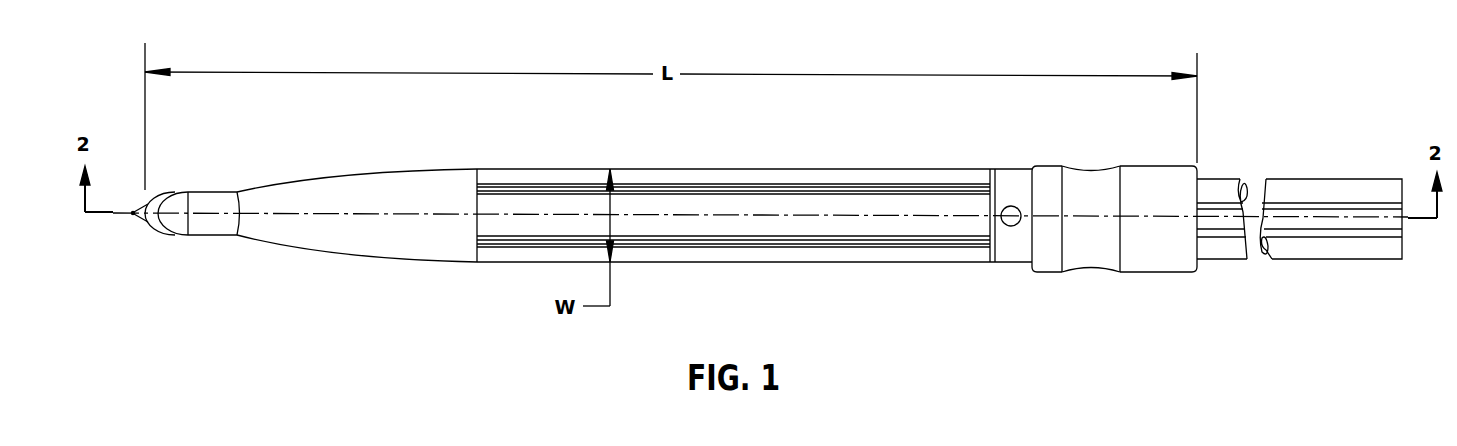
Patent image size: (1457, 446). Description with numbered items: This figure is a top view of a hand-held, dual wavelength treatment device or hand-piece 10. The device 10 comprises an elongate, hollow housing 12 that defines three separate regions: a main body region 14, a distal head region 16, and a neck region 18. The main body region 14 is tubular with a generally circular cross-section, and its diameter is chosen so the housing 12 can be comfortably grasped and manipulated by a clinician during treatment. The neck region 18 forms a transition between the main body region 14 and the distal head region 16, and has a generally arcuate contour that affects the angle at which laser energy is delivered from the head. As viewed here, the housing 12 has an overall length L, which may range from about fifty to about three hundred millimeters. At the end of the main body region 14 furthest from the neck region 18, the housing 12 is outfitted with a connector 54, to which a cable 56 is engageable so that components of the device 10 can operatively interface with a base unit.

The hand-held dual wavelength treatment device 10 is at (780, 152).
The elongate housing 12 is at (874, 162).
The main body region 14 is at (972, 178).
The distal head region 16 is at (165, 232).
The neck region 18 is at (303, 177).
The connector 54 is at (1083, 257).
The cable 56 is at (1322, 183).